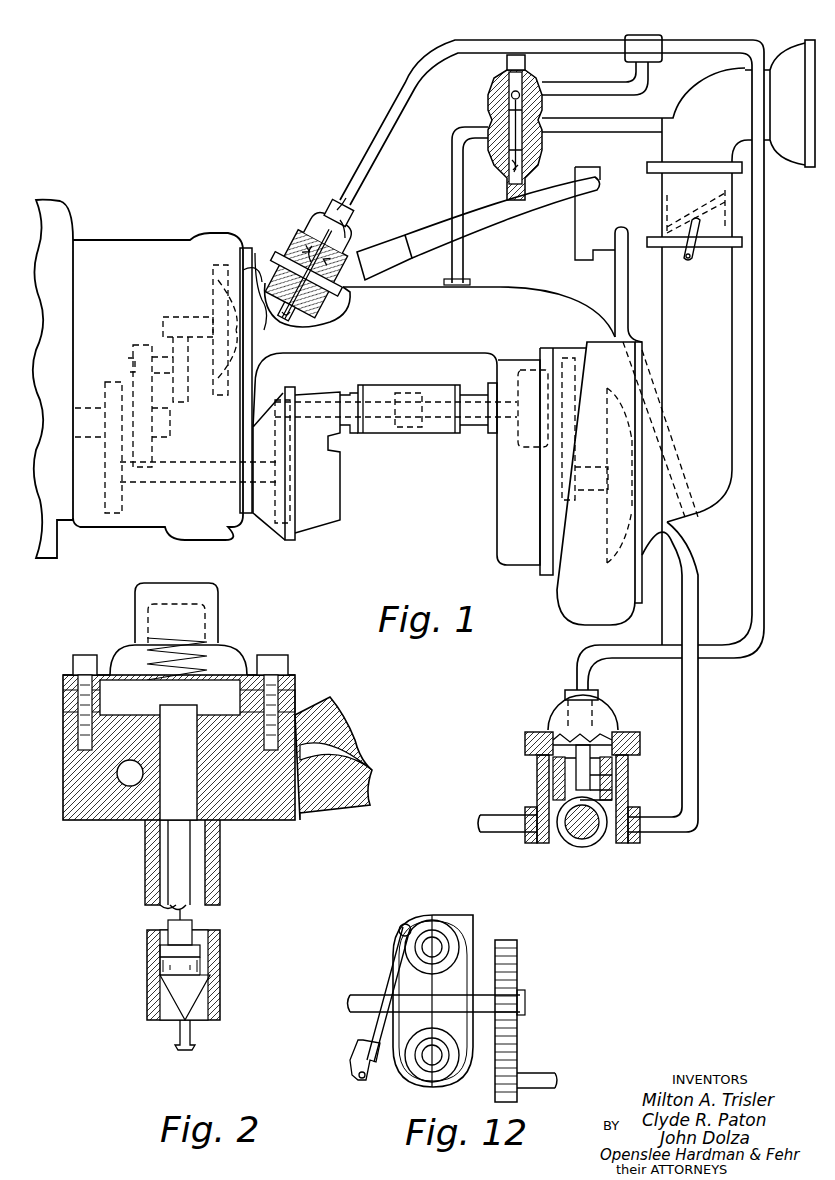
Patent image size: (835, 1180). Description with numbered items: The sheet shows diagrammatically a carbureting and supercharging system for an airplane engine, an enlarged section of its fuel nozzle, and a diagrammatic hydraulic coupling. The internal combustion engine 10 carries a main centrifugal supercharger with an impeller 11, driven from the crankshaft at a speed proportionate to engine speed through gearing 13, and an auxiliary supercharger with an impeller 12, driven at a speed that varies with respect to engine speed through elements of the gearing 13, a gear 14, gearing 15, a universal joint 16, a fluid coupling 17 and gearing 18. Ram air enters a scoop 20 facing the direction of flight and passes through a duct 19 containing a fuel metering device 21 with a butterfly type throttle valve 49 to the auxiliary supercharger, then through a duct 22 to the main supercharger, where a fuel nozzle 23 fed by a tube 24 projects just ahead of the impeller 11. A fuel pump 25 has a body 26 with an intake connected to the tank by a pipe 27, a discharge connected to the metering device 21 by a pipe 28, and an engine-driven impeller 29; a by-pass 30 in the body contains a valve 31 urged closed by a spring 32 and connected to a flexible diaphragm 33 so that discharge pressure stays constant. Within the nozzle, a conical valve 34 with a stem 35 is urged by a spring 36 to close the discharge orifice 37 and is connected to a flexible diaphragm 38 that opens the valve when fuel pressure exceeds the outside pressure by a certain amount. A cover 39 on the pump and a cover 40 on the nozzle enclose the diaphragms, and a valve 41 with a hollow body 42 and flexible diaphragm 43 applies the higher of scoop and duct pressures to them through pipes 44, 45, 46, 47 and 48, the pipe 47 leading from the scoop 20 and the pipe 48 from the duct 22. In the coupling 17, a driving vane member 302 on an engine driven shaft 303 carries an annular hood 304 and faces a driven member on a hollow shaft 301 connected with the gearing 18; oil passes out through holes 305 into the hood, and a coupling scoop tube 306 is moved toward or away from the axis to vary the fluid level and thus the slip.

In FIG. 1, the internal combustion engine 10 is at (198, 233).
In FIG. 1, the impeller 11 is at (212, 275).
In FIG. 1, the impeller 12 is at (610, 568).
In FIG. 1, the gearing 13 is at (132, 344).
In FIG. 1, the gear 14 is at (105, 500).
In FIG. 1, the gearing 15 is at (275, 508).
In FIG. 1, the universal joint 16 is at (416, 434).
In FIG. 1, the fluid coupling 17 is at (530, 450).
In FIG. 1, the gearing 18 is at (567, 357).
In FIG. 12, the gearing 18 is at (519, 954).
In FIG. 1, the duct 19 is at (661, 283).
In FIG. 1, the scoop 20 is at (795, 48).
In FIG. 1, the fuel metering device 21 is at (560, 242).
In FIG. 1, the duct 22 is at (530, 288).
In FIG. 1, the fuel nozzle 23 is at (322, 318).
In FIG. 2, the fuel nozzle 23 is at (145, 868).
In FIG. 1, the tube 24 is at (494, 216).
In FIG. 1, the fuel pump 25 is at (538, 687).
In FIG. 1, the body 26 is at (538, 792).
In FIG. 1, the pipe 27 is at (500, 834).
In FIG. 1, the pipe 28 is at (694, 546).
In FIG. 1, the impeller 29 is at (581, 847).
In FIG. 1, the by-pass 30 is at (616, 792).
In FIG. 1, the valve 31 is at (614, 756).
In FIG. 1, the spring 32 is at (560, 730).
In FIG. 1, the flexible diaphragm 33 is at (524, 748).
In FIG. 2, the conical valve 34 is at (190, 995).
In FIG. 1, the stem 35 is at (330, 300).
In FIG. 2, the stem 35 is at (186, 925).
In FIG. 1, the spring 36 is at (316, 232).
In FIG. 2, the spring 36 is at (115, 650).
In FIG. 2, the discharge orifice 37 is at (192, 1020).
In FIG. 1, the flexible diaphragm 38 is at (346, 236).
In FIG. 2, the flexible diaphragm 38 is at (215, 652).
In FIG. 1, the cover 39 is at (608, 710).
In FIG. 1, the cover 40 is at (337, 208).
In FIG. 2, the cover 40 is at (134, 606).
In FIG. 1, the valve 41 is at (490, 78).
In FIG. 1, the hollow body 42 is at (490, 103).
In FIG. 1, the flexible diaphragm 43 is at (525, 165).
In FIG. 1, the pipe 44 is at (766, 544).
In FIG. 1, the pipe 45 is at (398, 110).
In FIG. 1, the pipe 46 is at (590, 81).
In FIG. 1, the pipe 47 is at (630, 120).
In FIG. 1, the pipe 48 is at (451, 185).
In FIG. 1, the butterfly type throttle valve 49 is at (665, 222).
In FIG. 12, the hollow shaft 301 is at (476, 980).
In FIG. 12, the driving vane member 302 is at (425, 918).
In FIG. 12, the engine driven shaft 303 is at (362, 1008).
In FIG. 12, the annular hood 304 is at (399, 927).
In FIG. 12, the holes 305 is at (415, 1088).
In FIG. 12, the coupling scoop tube 306 is at (386, 985).